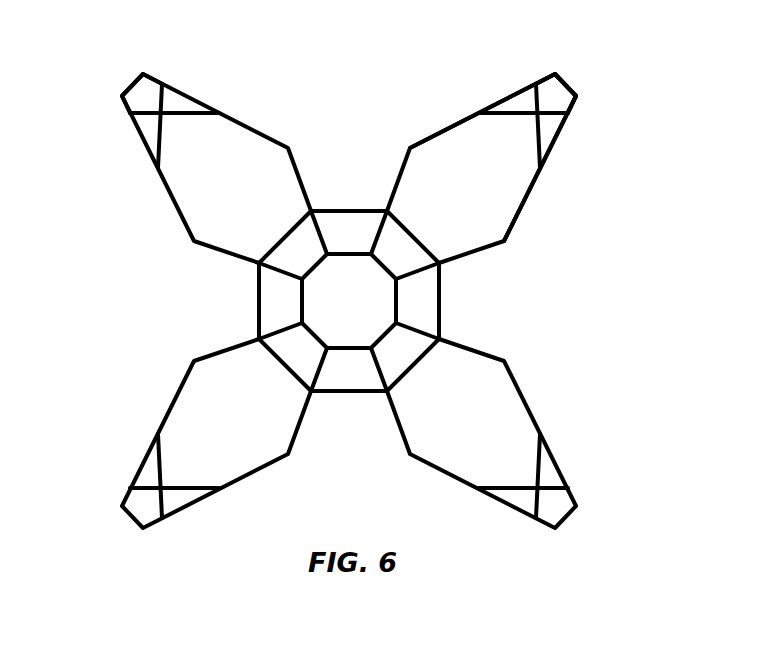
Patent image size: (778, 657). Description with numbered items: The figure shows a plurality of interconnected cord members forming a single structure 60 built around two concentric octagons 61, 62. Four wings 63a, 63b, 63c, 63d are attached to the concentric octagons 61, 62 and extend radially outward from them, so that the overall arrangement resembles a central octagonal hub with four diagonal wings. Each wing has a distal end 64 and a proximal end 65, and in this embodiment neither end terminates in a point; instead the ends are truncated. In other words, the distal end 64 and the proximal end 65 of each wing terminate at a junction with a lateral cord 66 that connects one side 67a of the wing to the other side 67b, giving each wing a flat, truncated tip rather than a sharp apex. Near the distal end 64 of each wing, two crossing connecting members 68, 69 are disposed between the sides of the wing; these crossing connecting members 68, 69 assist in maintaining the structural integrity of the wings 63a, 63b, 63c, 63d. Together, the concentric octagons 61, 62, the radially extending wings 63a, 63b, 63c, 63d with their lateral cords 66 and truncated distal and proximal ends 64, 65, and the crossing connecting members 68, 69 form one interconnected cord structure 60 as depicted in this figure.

The expandable frame structure 60 is at (466, 293).
The octagon 61 is at (333, 209).
The octagon 62 is at (347, 254).
The wing 63a is at (503, 97).
The wing 63b is at (530, 408).
The wing 63c is at (247, 477).
The wing 63d is at (183, 92).
The distal end 64 is at (122, 70).
The proximal end 65 is at (382, 279).
The lateral cord 66 is at (573, 81).
The side of the wing 67a is at (578, 103).
The side of the wing 67b is at (553, 72).
The crossing connecting member 68 is at (158, 460).
The crossing connecting member 69 is at (183, 490).